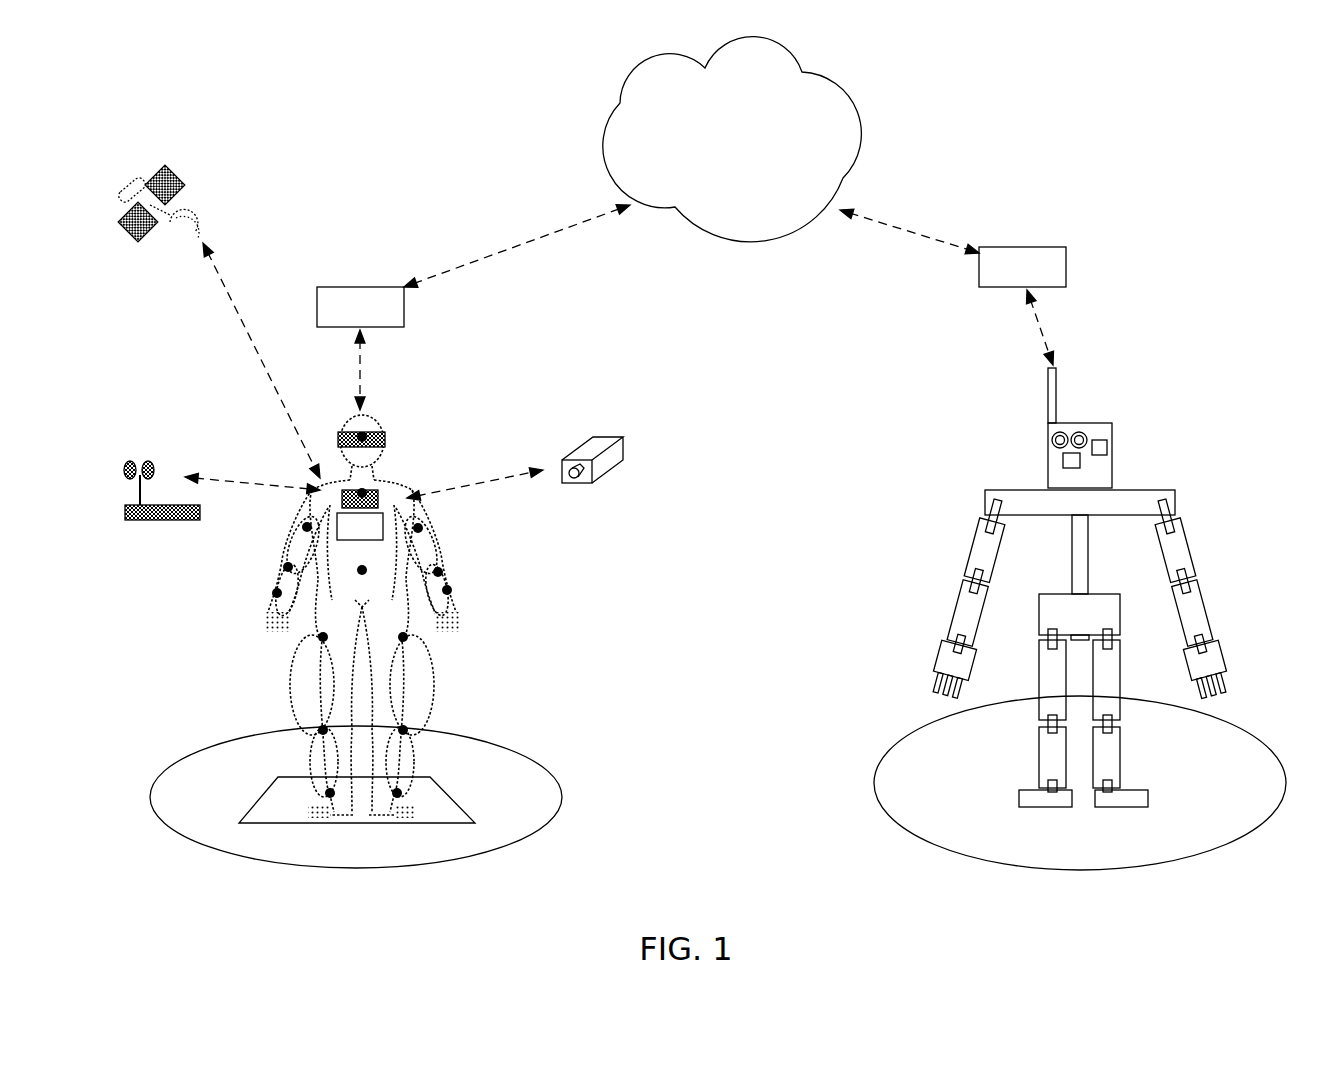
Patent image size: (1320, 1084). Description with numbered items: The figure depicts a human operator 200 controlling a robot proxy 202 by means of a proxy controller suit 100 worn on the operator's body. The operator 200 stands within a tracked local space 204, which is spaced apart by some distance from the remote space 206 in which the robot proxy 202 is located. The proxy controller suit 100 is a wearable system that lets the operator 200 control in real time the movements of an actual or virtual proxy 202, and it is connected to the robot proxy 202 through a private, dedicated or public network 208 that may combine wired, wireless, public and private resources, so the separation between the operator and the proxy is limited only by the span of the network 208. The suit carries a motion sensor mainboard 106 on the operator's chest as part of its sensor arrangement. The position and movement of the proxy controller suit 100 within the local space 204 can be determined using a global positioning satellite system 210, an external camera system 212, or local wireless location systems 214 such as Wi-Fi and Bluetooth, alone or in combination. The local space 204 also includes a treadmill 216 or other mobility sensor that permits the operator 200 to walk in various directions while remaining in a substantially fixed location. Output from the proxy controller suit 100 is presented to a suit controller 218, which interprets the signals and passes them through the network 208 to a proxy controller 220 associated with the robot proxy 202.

The proxy controller suit 100 is at (258, 546).
The motion sensor mainboard 106 is at (360, 526).
The human operator 200 is at (395, 482).
The robot proxy 202 is at (1010, 490).
The tracked local space 204 is at (500, 745).
The remote space 206 is at (918, 768).
The network 208 is at (732, 139).
The global positioning satellite (GPS) system 210 is at (210, 182).
The external camera system 212 is at (623, 437).
The local wireless location system 214 is at (172, 521).
The treadmill 216 is at (437, 817).
The suit controller 218 is at (360, 307).
The proxy controller 220 is at (1022, 267).